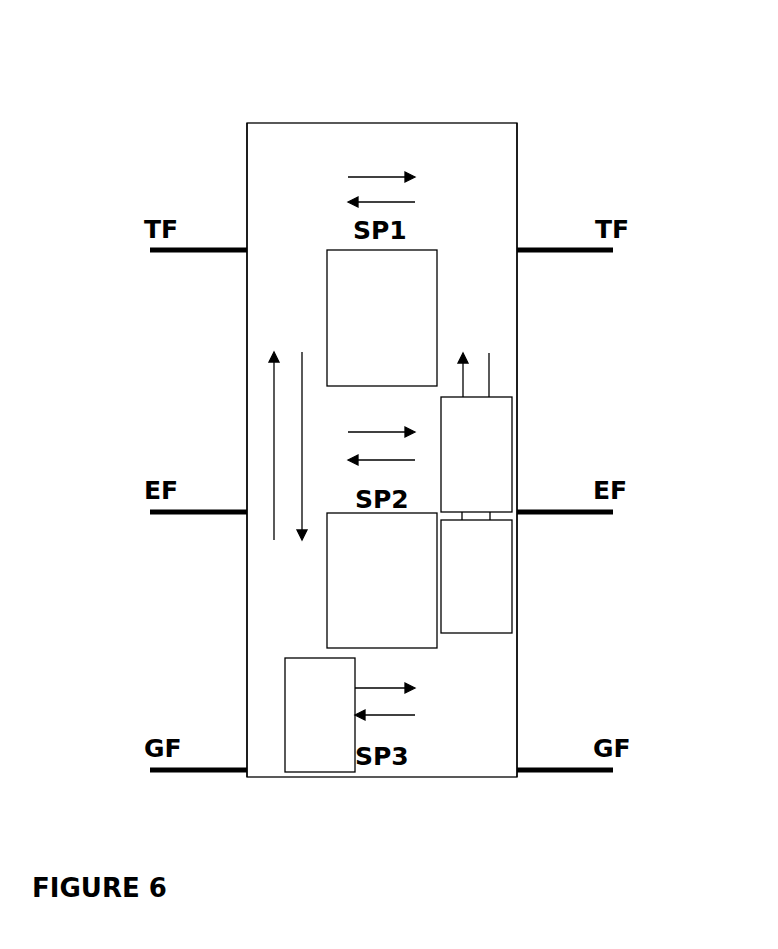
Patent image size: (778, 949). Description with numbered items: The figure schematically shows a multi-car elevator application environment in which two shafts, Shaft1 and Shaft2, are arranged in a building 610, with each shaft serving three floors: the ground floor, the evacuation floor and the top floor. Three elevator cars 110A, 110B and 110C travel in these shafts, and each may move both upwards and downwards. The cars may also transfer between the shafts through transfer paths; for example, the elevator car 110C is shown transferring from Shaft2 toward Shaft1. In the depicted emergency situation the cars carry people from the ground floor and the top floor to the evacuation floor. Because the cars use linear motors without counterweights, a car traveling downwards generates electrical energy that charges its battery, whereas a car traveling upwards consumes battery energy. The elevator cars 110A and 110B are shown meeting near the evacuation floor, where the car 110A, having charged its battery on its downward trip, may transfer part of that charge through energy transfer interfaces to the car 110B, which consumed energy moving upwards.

The building 610 is at (371, 62).
The shaft Shaft1 is at (282, 103).
The shaft Shaft2 is at (486, 103).
The elevator car 110A is at (514, 421).
The elevator car 110B is at (514, 580).
The elevator car 110C is at (306, 657).